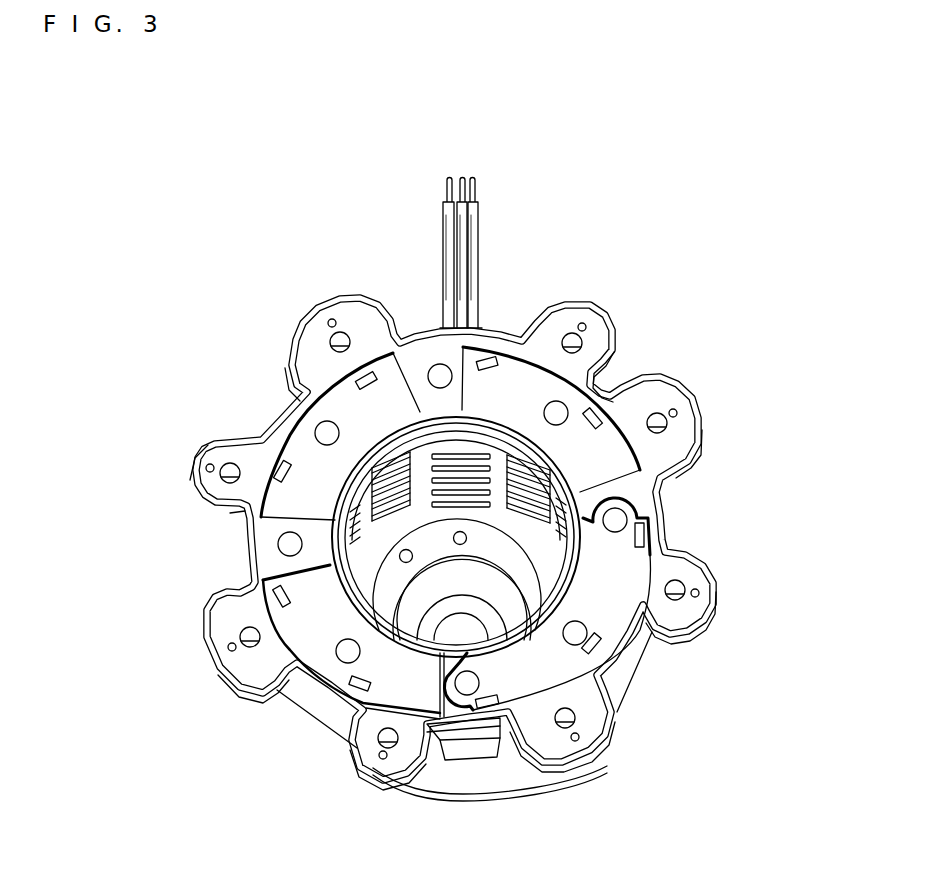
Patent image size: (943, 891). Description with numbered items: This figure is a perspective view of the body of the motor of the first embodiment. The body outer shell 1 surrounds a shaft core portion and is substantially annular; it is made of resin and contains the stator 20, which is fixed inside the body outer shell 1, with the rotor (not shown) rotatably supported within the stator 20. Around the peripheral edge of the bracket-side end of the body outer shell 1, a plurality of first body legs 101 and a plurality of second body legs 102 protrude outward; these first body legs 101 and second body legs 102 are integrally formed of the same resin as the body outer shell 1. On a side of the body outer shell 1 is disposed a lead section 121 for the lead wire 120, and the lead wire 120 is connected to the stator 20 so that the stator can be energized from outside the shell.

The body outer shell 1 is at (643, 683).
The stator 20 is at (613, 560).
The first body legs 101 is at (593, 320).
The second body legs 102 is at (318, 317).
The lead wire 120 is at (478, 222).
The lead section 121 is at (470, 325).